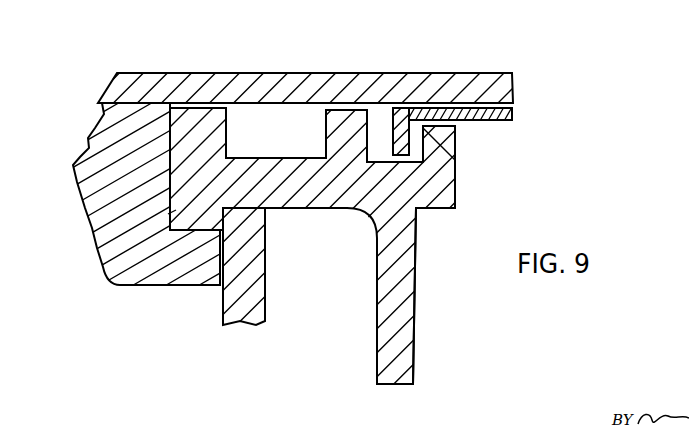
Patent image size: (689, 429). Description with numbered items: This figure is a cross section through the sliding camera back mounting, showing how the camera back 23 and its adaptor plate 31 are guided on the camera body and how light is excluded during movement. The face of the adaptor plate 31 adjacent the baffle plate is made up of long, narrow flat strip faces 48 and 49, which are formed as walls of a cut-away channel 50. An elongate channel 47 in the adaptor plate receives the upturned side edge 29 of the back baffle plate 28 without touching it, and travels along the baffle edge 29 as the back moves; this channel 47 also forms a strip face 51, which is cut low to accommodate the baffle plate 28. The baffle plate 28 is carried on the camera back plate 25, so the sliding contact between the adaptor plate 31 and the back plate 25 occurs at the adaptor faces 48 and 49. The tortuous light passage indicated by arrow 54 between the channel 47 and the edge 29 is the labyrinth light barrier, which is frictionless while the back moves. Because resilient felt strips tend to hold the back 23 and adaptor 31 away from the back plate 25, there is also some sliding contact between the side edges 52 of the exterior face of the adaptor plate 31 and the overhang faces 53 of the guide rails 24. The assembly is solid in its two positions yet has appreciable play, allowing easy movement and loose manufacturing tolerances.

The camera back 23 is at (223, 302).
The guide rail 24 is at (103, 262).
The camera back plate 25 is at (445, 73).
The back baffle plate 28 is at (500, 120).
The upturned side edge 29 is at (456, 162).
The adaptor plate 31 is at (172, 212).
The elongate channel 47 is at (382, 163).
The flat strip face 48 is at (193, 108).
The flat strip face 49 is at (340, 110).
The cut-away channel 50 is at (272, 158).
The strip face 51 is at (410, 142).
The side edge 52 is at (212, 230).
The overhang face 53 is at (184, 218).
The arrow 54 is at (381, 138).